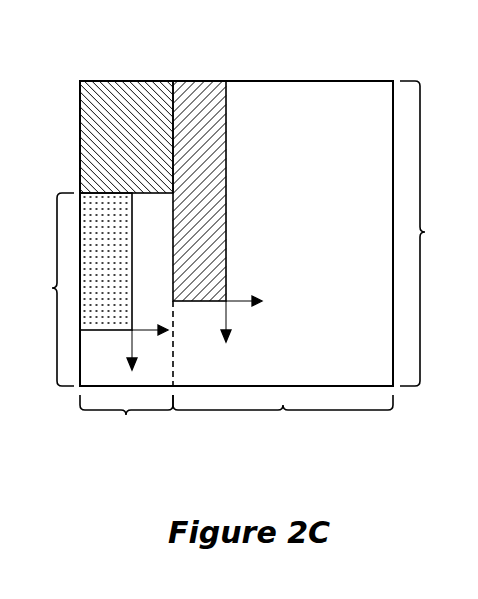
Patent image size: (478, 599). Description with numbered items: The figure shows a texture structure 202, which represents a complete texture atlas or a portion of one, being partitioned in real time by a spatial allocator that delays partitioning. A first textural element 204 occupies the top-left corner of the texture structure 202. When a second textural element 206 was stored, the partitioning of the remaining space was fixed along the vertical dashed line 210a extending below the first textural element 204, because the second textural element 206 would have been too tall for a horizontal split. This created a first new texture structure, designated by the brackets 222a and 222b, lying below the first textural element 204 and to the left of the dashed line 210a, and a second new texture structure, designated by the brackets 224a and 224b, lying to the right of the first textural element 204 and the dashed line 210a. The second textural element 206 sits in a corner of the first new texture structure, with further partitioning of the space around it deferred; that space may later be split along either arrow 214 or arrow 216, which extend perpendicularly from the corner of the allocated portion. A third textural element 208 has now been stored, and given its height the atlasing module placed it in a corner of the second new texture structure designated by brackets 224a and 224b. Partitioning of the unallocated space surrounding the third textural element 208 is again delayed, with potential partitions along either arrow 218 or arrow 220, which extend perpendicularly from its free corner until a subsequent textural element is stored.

The texture structure 202 is at (81, 78).
The first textural element 204 is at (126, 137).
The second textural element 206 is at (106, 261).
The third textural element 208 is at (199, 191).
The dashed line 210a is at (176, 363).
The arrow 214 is at (134, 336).
The arrow 216 is at (147, 326).
The arrow 218 is at (228, 318).
The arrow 220 is at (240, 297).
The bracket 222a is at (52, 288).
The bracket 222b is at (126, 421).
The bracket 224a is at (425, 232).
The bracket 224b is at (283, 421).